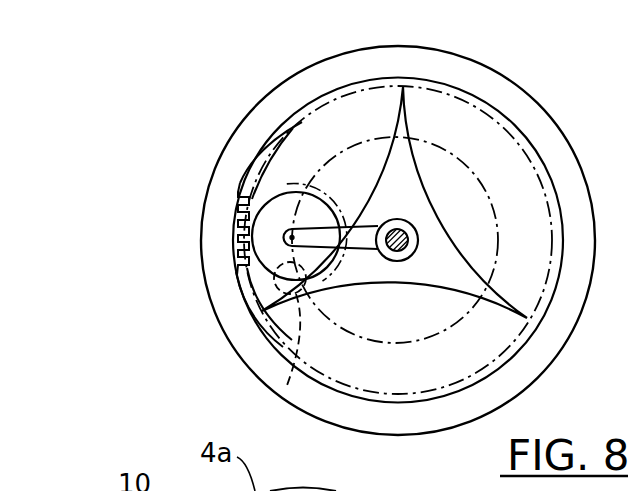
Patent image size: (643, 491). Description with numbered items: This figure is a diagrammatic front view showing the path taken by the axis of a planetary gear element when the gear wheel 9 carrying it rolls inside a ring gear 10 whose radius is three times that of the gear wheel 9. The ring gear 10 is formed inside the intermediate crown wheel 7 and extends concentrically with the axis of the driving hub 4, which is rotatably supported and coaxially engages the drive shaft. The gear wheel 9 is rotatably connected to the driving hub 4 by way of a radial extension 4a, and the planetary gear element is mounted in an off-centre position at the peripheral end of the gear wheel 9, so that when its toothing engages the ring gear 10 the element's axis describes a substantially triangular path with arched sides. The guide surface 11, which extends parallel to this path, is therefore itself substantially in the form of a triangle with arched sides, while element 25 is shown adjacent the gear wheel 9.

The intermediate crown wheel 7 is at (273, 97).
The gear wheel 9 is at (288, 208).
The ring gear 10 is at (238, 280).
The guide surface 11 is at (410, 127).
The driving hub 4 is at (416, 236).
The radial extension 4a is at (358, 233).
The roller 25 is at (285, 393).